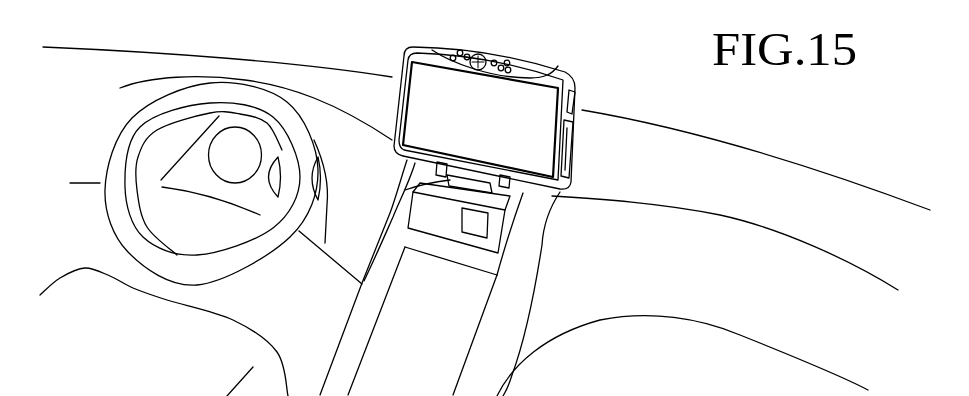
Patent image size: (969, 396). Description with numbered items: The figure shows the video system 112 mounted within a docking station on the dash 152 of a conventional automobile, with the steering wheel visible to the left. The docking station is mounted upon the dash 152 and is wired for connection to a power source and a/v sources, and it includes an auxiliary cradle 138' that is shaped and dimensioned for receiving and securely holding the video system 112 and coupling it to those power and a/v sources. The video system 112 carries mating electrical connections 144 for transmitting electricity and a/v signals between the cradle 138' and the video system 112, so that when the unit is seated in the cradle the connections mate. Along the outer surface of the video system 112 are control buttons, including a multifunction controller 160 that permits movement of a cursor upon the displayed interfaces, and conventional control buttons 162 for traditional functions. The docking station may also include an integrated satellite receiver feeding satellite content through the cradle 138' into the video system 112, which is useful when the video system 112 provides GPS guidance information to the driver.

The video system 112 is at (516, 102).
The mating electrical connections 144 is at (450, 172).
The auxiliary cradle 138' is at (428, 278).
The dash 152 is at (648, 162).
The multifunction controller 160 is at (476, 54).
The control buttons 162 is at (455, 55).